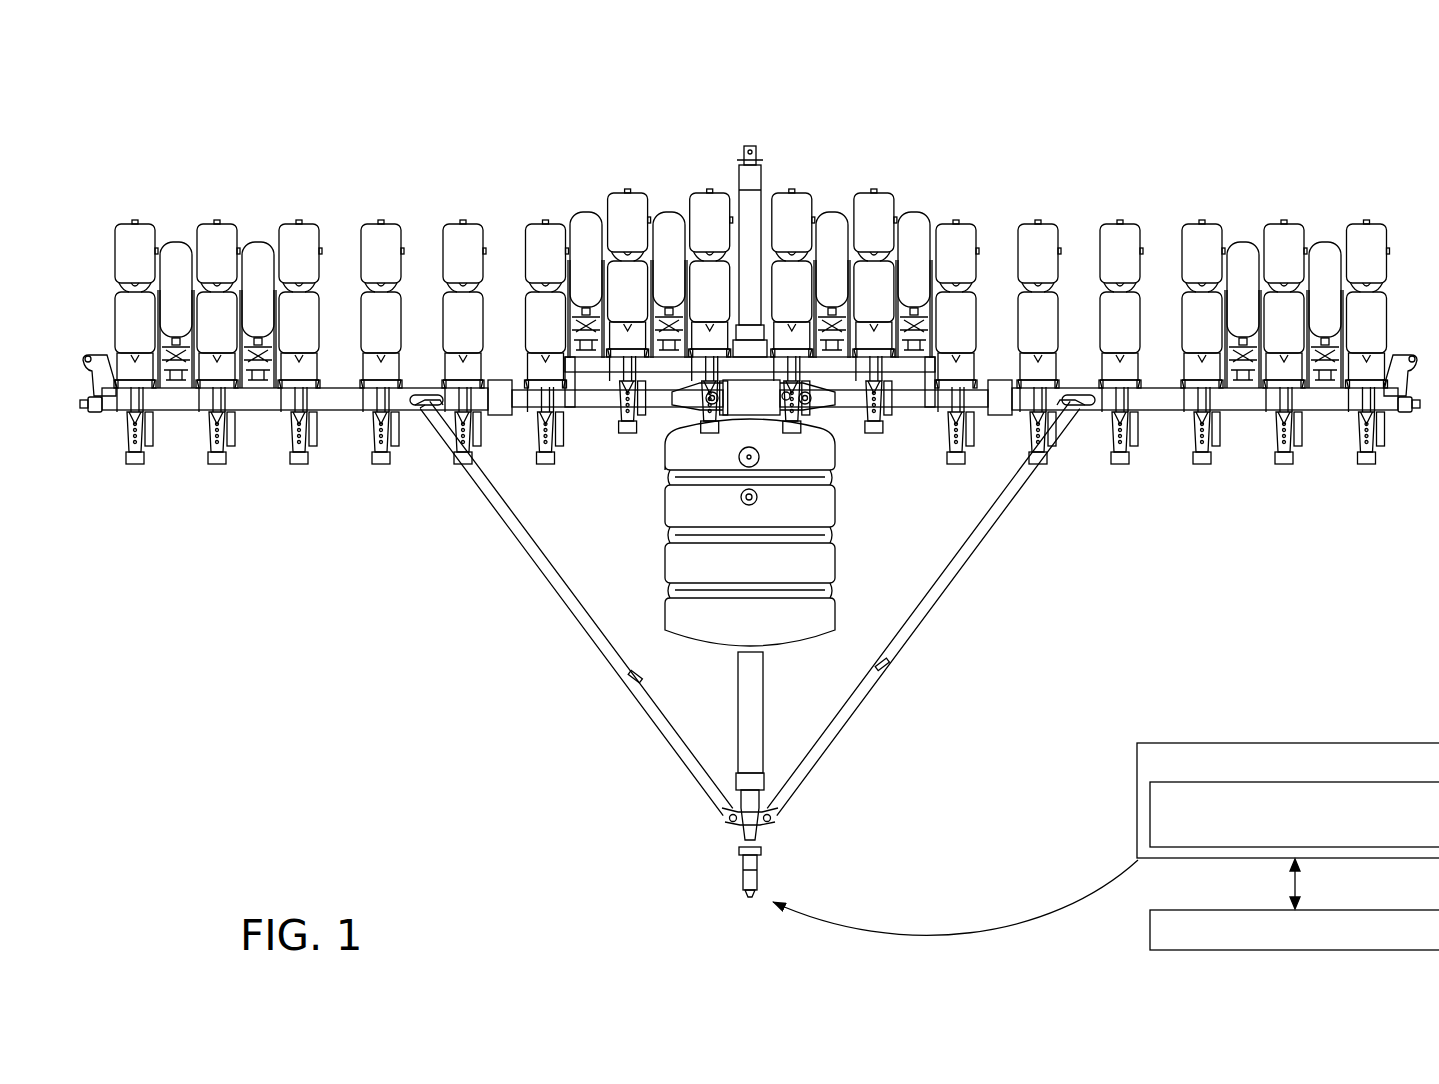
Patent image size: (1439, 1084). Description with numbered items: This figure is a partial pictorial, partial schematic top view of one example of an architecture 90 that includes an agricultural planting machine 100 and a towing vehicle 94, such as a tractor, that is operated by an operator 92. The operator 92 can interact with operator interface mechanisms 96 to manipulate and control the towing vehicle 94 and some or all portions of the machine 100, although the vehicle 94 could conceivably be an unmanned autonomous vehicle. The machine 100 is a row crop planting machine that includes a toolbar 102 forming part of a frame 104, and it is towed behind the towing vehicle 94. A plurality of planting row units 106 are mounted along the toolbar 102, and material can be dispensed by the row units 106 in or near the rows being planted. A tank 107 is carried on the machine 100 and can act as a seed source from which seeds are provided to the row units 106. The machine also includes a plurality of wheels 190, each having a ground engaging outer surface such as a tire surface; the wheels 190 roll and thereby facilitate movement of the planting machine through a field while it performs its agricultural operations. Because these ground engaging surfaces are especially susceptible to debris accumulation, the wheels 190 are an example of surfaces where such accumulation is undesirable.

The architecture 90 is at (1165, 150).
The agricultural planting machine 100 is at (1252, 628).
The toolbar 102 is at (1155, 412).
The frame 104 is at (853, 738).
The planting row units 106 is at (295, 226).
The tank 107 is at (677, 569).
The wheels 190 is at (176, 245).
The towing vehicle 94 is at (1288, 800).
The operator interface mechanisms 96 is at (1294, 814).
The operator 92 is at (1294, 930).